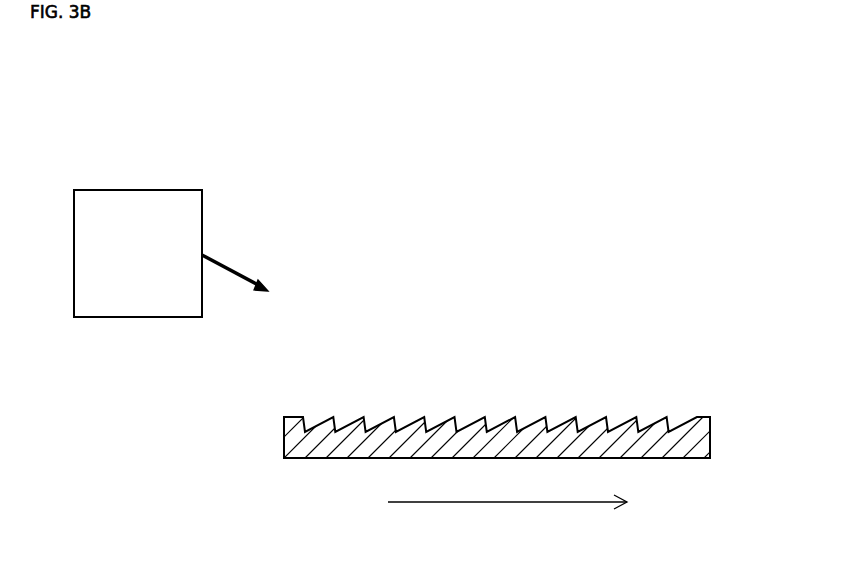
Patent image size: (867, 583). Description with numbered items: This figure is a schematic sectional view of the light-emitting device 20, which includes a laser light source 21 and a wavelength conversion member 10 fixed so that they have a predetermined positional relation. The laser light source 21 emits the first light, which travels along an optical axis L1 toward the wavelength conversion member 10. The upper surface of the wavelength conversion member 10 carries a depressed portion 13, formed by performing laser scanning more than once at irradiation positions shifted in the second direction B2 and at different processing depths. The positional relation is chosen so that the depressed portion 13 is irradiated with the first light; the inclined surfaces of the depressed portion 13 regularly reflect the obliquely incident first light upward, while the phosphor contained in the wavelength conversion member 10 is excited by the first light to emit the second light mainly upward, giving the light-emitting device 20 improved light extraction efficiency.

The laser light source 21 is at (111, 208).
The optical axis of the first light L1 is at (233, 267).
The light-emitting device 20 is at (703, 184).
The wavelength conversion member 10 is at (700, 445).
The depressed portion 13 is at (433, 420).
The second direction B2 is at (507, 521).